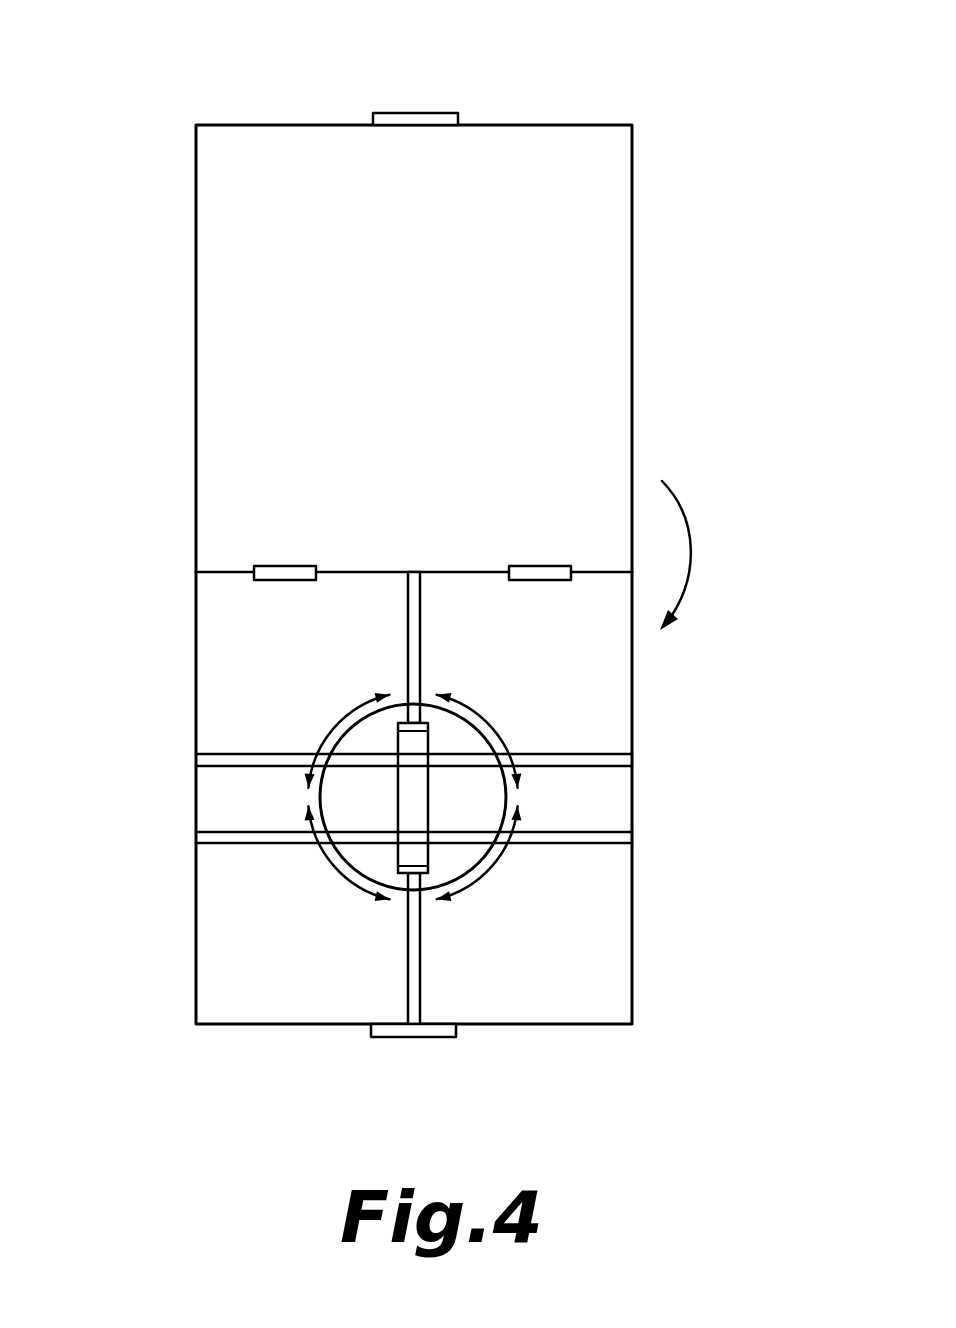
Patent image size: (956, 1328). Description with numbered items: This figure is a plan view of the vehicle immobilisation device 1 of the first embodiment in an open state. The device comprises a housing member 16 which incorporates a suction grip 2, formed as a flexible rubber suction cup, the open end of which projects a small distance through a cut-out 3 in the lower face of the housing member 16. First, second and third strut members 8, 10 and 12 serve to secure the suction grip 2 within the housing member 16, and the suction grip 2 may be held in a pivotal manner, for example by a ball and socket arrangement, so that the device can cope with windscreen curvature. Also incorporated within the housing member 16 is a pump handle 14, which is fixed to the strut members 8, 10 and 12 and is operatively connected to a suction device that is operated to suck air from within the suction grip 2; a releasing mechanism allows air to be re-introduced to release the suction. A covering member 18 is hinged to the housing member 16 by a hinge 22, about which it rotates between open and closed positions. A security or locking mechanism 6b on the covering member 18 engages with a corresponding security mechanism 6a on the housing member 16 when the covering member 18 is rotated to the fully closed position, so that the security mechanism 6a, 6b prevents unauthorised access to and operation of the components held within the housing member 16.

The vehicle immobilisation device 1 is at (444, 574).
The suction grip 2 is at (485, 722).
The cut-out 3 is at (360, 715).
The security mechanism 6a is at (405, 1033).
The security mechanism 6b is at (435, 112).
The first strut member 8 is at (420, 640).
The second strut member 10 is at (577, 754).
The third strut member 12 is at (577, 838).
The pump handle 14 is at (402, 787).
The housing member 16 is at (200, 661).
The covering member 18 is at (200, 260).
The hinge 22 is at (290, 566).